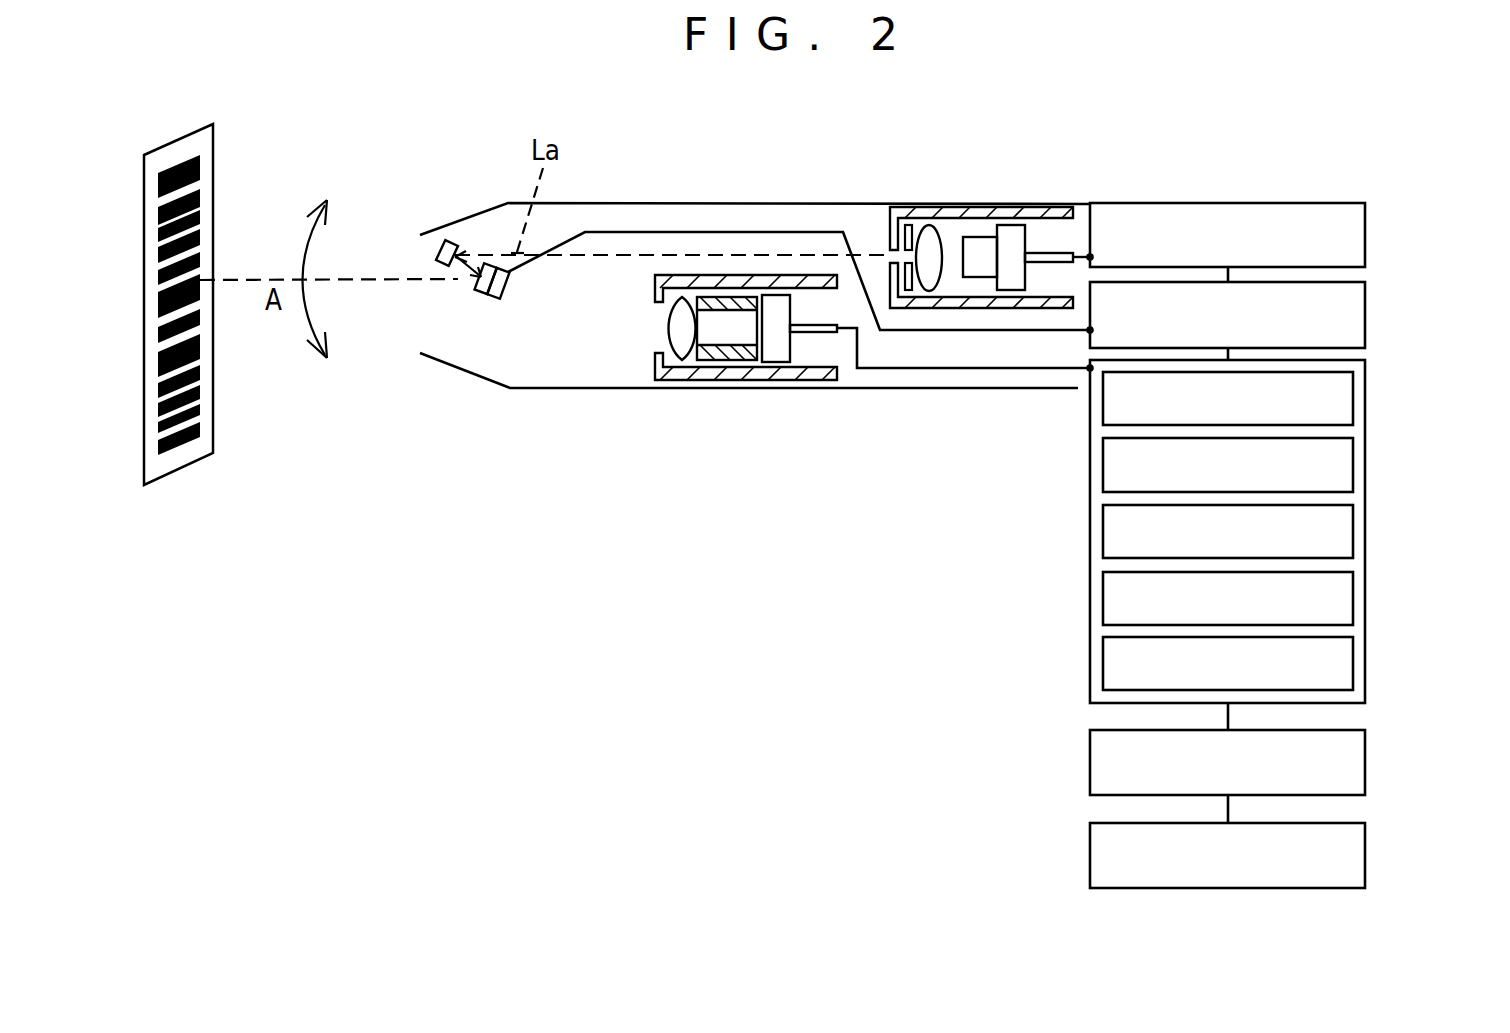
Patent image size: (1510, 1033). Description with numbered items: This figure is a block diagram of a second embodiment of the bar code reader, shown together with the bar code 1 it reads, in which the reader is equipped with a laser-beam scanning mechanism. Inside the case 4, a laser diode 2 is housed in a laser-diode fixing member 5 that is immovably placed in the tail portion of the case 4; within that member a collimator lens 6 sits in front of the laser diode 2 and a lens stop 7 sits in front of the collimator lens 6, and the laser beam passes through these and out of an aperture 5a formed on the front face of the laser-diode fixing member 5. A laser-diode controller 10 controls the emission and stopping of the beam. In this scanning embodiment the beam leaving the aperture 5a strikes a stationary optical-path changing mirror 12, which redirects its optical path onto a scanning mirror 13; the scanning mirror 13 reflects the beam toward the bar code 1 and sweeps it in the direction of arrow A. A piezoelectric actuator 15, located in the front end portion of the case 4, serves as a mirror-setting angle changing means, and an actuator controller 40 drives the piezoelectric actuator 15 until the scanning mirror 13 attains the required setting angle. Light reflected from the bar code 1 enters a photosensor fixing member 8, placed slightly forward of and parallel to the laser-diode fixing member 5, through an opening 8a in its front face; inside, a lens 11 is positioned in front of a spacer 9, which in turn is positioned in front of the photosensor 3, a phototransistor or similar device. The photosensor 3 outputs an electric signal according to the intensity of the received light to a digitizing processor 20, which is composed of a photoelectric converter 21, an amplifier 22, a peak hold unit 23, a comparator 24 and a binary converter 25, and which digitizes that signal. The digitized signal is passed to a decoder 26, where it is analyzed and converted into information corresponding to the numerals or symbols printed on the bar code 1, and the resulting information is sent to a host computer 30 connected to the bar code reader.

The bar code 1 is at (193, 444).
The laser diode 2 is at (981, 236).
The photosensor 3 is at (792, 308).
The case 4 is at (745, 388).
The laser-diode fixing member 5 is at (1040, 217).
The aperture 5a is at (893, 256).
The collimator lens 6 is at (927, 235).
The lens stop 7 is at (908, 225).
The photosensor fixing member 8 is at (797, 375).
The opening 8a is at (656, 313).
The spacer 9 is at (712, 353).
The laser-diode controller 10 is at (1365, 232).
The lens 11 is at (668, 338).
The optical-path changing mirror 12 is at (437, 249).
The scanning mirror 13 is at (485, 297).
The piezoelectric actuator 15 is at (497, 297).
The digitizing processor 20 is at (1365, 500).
The photoelectric converter 21 is at (1353, 400).
The amplifier 22 is at (1353, 465).
The peak hold unit 23 is at (1353, 533).
The comparator 24 is at (1353, 598).
The binary converter 25 is at (1353, 663).
The decoder 26 is at (1365, 765).
The host computer 30 is at (1365, 858).
The actuator controller 40 is at (1365, 312).